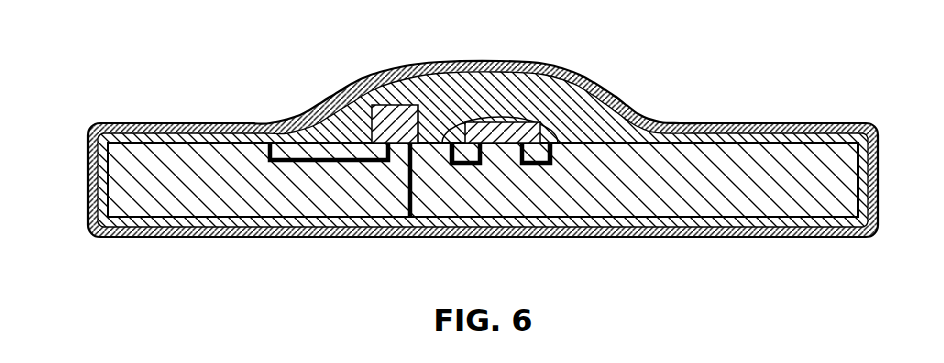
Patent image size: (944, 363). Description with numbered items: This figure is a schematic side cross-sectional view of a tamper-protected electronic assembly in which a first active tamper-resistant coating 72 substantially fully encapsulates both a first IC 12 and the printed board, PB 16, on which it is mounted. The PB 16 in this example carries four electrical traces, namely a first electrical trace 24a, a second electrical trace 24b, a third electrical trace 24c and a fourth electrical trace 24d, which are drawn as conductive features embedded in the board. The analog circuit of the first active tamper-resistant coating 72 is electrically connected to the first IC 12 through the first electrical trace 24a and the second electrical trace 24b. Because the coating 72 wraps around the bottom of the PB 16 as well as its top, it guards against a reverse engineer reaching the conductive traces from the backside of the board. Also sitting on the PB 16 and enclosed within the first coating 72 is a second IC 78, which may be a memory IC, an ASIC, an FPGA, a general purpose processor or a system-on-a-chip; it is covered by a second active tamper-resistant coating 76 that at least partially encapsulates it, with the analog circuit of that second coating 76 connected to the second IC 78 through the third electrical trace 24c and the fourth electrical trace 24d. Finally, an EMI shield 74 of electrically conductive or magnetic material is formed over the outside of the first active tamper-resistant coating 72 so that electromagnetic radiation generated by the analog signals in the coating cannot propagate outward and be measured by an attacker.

The first IC 12 is at (378, 120).
The PB 16 is at (113, 181).
The first electrical trace 24a is at (345, 163).
The second electrical trace 24b is at (408, 192).
The third electrical trace 24c is at (472, 165).
The fourth electrical trace 24d is at (543, 165).
The first active tamper-resistant coating 72 is at (152, 128).
The EMI shield 74 is at (273, 125).
The second active tamper-resistant coating 76 is at (557, 137).
The second IC 78 is at (467, 130).